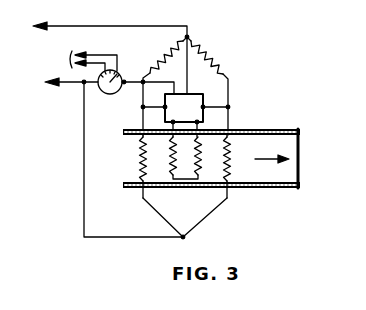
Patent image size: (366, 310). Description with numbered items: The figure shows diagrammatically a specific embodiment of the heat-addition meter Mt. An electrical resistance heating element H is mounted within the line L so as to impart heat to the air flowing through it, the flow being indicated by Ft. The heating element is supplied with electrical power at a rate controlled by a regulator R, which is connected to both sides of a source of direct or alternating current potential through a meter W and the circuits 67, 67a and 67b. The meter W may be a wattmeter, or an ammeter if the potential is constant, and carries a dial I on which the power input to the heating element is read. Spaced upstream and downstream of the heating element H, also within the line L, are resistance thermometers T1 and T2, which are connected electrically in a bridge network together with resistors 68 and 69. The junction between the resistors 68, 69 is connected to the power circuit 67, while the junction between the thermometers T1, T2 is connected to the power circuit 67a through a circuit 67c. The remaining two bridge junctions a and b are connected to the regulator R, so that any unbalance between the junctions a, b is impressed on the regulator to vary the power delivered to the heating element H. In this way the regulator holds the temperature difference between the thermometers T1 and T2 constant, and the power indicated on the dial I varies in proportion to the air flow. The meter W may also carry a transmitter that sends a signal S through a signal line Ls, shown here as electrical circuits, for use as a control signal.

The power circuit 67 is at (60, 27).
The power circuit 67a is at (70, 85).
The circuit 67b is at (131, 79).
The circuit 67c is at (82, 203).
The resistor 68 is at (173, 48).
The resistor 69 is at (210, 51).
The regulator R is at (184, 115).
The meter W is at (108, 93).
The line L is at (281, 188).
The resistance thermometer T1 is at (143, 170).
The resistance thermometer T2 is at (229, 163).
The electrical resistance heating element H is at (171, 168).
The meter Mt is at (244, 80).
The measured sum Ft is at (270, 151).
The signal S is at (96, 54).
The signal line Ls is at (57, 60).
The dial I is at (121, 74).
The bridge junction a is at (143, 107).
The bridge junction b is at (228, 107).